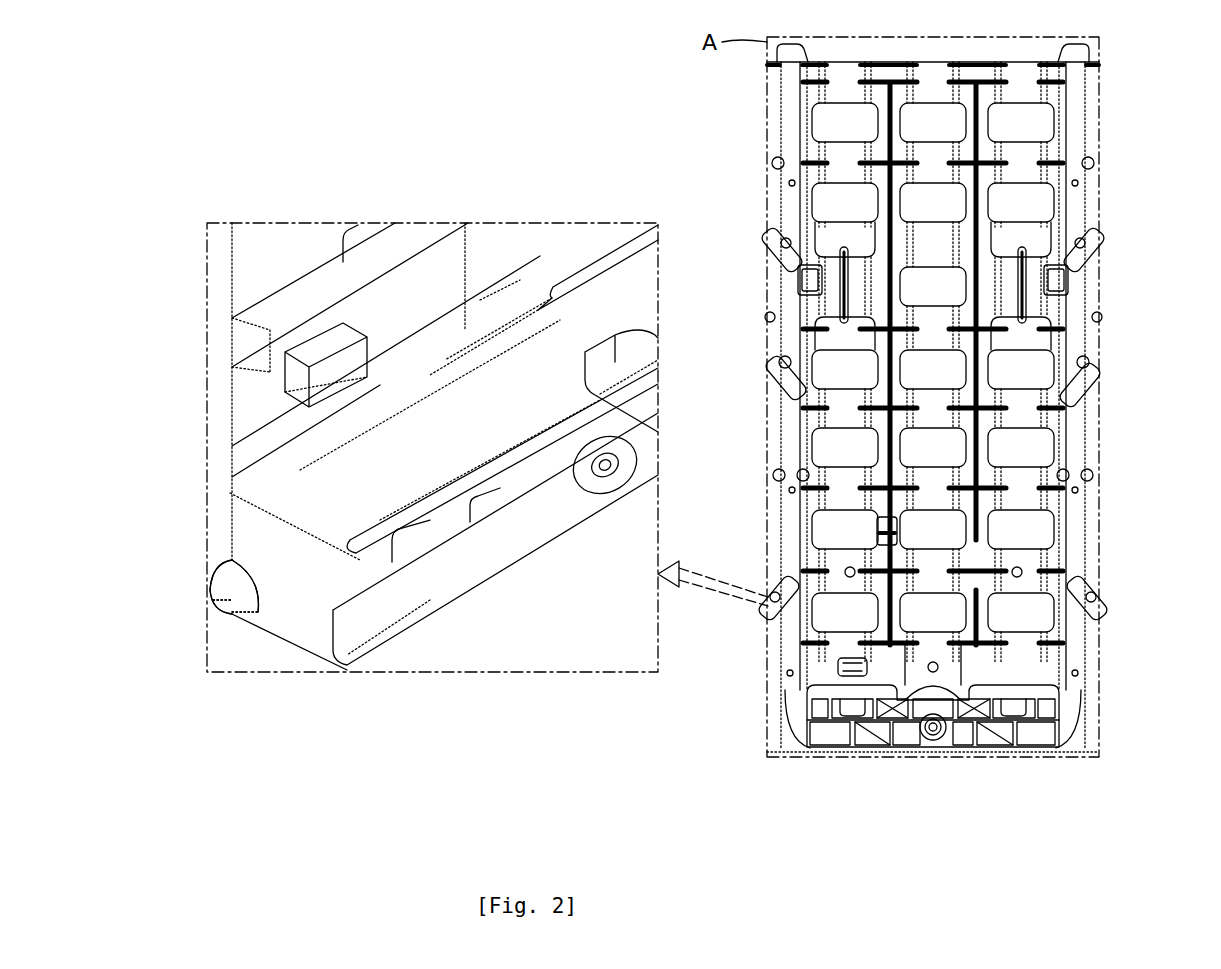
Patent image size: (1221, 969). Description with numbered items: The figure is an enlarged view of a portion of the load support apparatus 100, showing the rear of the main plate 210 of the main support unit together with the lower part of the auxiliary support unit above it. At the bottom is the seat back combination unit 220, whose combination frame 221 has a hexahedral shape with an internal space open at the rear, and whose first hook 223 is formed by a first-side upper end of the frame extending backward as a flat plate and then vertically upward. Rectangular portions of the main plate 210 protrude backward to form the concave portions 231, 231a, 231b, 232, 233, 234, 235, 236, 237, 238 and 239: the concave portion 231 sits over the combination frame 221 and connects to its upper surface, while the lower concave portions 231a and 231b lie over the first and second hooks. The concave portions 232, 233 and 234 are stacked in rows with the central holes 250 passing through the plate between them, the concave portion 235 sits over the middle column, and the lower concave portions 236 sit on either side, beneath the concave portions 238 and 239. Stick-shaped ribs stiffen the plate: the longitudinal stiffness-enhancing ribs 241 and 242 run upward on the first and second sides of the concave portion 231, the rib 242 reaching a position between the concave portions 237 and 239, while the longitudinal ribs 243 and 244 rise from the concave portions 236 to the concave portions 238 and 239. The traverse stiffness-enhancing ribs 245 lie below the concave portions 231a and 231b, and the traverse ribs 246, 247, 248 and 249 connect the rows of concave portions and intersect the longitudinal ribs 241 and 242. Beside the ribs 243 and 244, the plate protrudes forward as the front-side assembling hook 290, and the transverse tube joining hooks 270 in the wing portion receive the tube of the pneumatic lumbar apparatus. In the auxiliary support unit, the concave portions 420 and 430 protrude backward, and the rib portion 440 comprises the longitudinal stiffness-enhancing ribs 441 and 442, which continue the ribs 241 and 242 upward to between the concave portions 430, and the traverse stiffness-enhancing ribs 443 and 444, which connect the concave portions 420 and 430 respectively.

The load support apparatus 100 is at (229, 170).
The main plate 210 is at (260, 373).
The seat back combination unit 220 is at (1070, 755).
The combination frame 221 is at (322, 647).
The first hook 223 is at (367, 552).
The concave portion 231 is at (923, 668).
The concave portion 231a is at (833, 644).
The concave portion 231b is at (1045, 640).
The concave portions 232 is at (933, 567).
The concave portions 233 is at (837, 400).
The concave portions 234 is at (830, 352).
The concave portion 235 is at (822, 293).
The concave portions 236 is at (923, 317).
The concave portion 237 is at (923, 243).
The concave portion 238 is at (837, 242).
The concave portion 239 is at (1075, 240).
The longitudinal stiffness-enhancing rib 241 is at (842, 465).
The longitudinal stiffness-enhancing rib 242 is at (998, 392).
The longitudinal stiffness-enhancing rib 243 is at (786, 257).
The longitudinal stiffness-enhancing rib 244 is at (1027, 307).
The traverse stiffness-enhancing ribs 245 is at (838, 656).
The traverse stiffness-enhancing ribs 246 is at (828, 568).
The traverse stiffness-enhancing ribs 247 is at (825, 490).
The traverse stiffness-enhancing ribs 248 is at (987, 435).
The traverse stiffness-enhancing ribs 249 is at (823, 334).
The central holes 250 is at (1043, 447).
The transverse tube joining hooks 270 is at (328, 343).
The front-side assembling hook 290 is at (1065, 280).
The concave portions 420 is at (842, 168).
The concave portions 430 is at (836, 83).
The rib portion 440 is at (936, 104).
The longitudinal stiffness-enhancing rib 441 is at (887, 155).
The longitudinal stiffness-enhancing rib 442 is at (980, 100).
The traverse stiffness-enhancing ribs 443 is at (955, 170).
The traverse stiffness-enhancing ribs 444 is at (1023, 82).